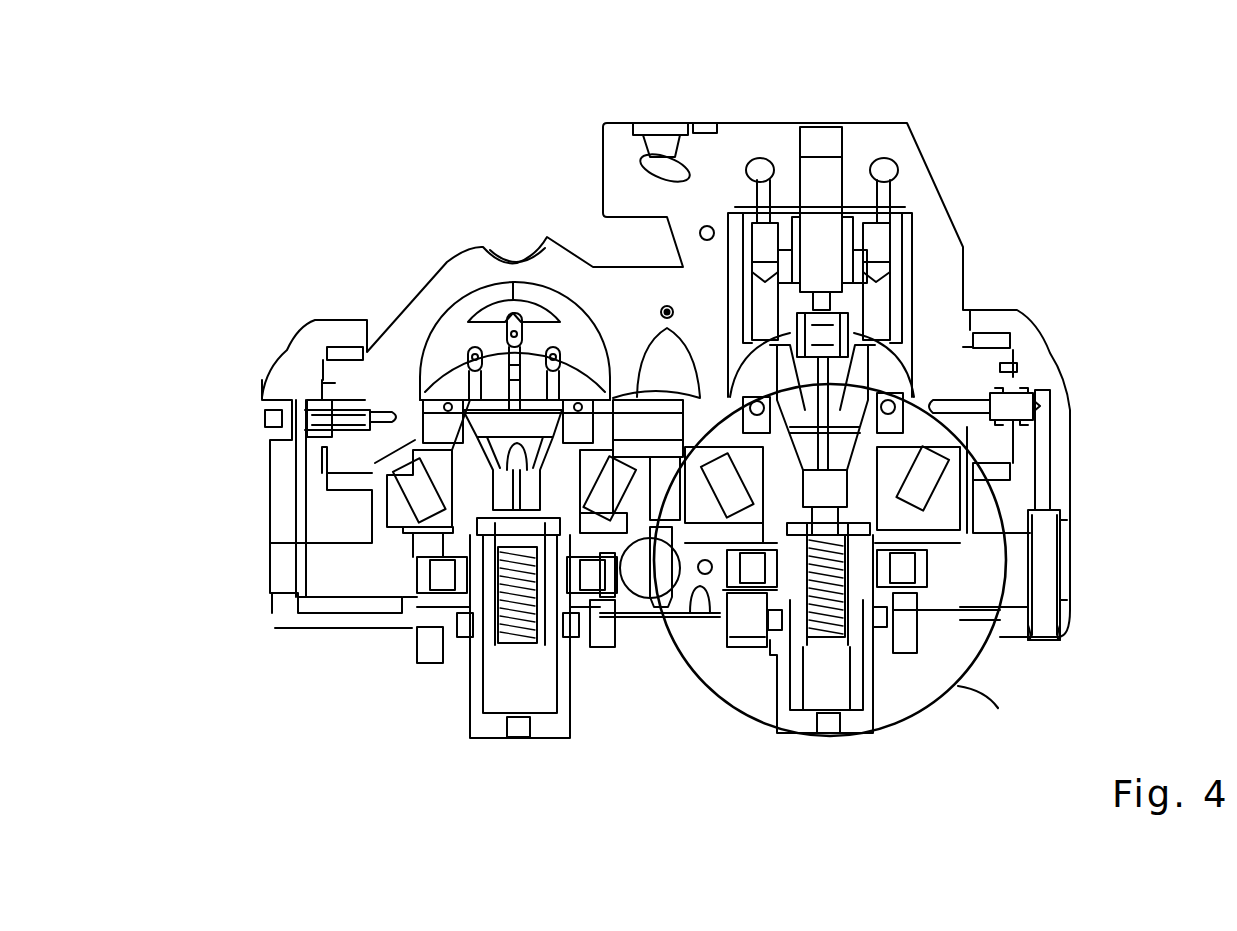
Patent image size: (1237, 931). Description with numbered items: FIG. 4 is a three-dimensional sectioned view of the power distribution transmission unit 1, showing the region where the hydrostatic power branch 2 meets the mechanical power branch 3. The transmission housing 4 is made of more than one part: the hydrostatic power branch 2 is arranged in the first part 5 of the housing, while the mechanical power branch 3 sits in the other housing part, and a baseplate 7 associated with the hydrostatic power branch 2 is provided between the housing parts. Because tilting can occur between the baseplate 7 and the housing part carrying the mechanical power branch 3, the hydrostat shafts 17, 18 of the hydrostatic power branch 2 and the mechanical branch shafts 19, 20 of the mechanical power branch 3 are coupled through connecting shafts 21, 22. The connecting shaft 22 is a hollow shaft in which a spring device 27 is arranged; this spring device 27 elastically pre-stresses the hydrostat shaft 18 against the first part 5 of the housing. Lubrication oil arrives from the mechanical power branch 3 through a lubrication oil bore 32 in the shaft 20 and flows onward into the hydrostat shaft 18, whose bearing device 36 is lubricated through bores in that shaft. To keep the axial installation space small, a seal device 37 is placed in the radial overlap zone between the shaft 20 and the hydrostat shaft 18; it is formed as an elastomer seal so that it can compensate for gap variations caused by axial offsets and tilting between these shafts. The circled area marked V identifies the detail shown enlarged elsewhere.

The power distribution transmission unit 1 is at (271, 204).
The hydrostatic power branch 2 is at (443, 262).
The mechanical power branch 3 is at (456, 713).
The transmission housing 4 is at (987, 193).
The first part of the housing 5 is at (550, 262).
The baseplate 7 is at (285, 563).
The hydrostat shaft 17 is at (463, 530).
The hydrostat shaft 18 is at (865, 487).
The mechanical branch shaft 19 is at (548, 722).
The mechanical branch shaft 20 is at (858, 718).
The connecting shaft 21 is at (548, 680).
The connecting shaft 22 is at (857, 678).
The spring device 27 is at (820, 647).
The lubrication oil bore 32 is at (817, 715).
The bearing device 36 is at (943, 490).
The seal device 37 is at (905, 650).